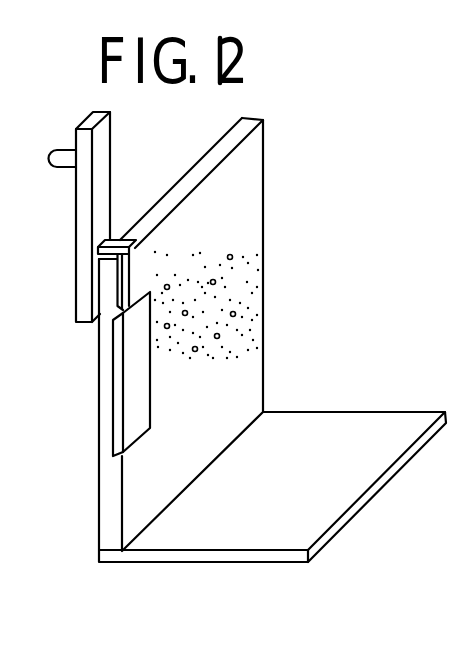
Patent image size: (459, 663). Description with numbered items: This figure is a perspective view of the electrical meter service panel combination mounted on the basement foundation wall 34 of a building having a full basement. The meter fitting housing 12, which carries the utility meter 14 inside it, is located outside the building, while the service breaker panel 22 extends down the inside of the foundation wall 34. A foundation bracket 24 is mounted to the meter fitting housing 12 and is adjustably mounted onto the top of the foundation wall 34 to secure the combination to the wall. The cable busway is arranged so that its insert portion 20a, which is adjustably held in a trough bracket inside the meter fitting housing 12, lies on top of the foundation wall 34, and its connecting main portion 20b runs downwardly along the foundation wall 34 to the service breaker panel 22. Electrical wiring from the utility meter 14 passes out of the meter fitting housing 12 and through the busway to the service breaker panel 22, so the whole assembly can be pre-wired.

The meter fitting housing 12 is at (97, 182).
The utility meter 14 is at (58, 150).
The insert portion 20a is at (131, 236).
The connecting main portion 20b is at (112, 283).
The service breaker panel 22 is at (140, 373).
The foundation bracket 24 is at (112, 283).
The foundation wall 34 is at (243, 185).